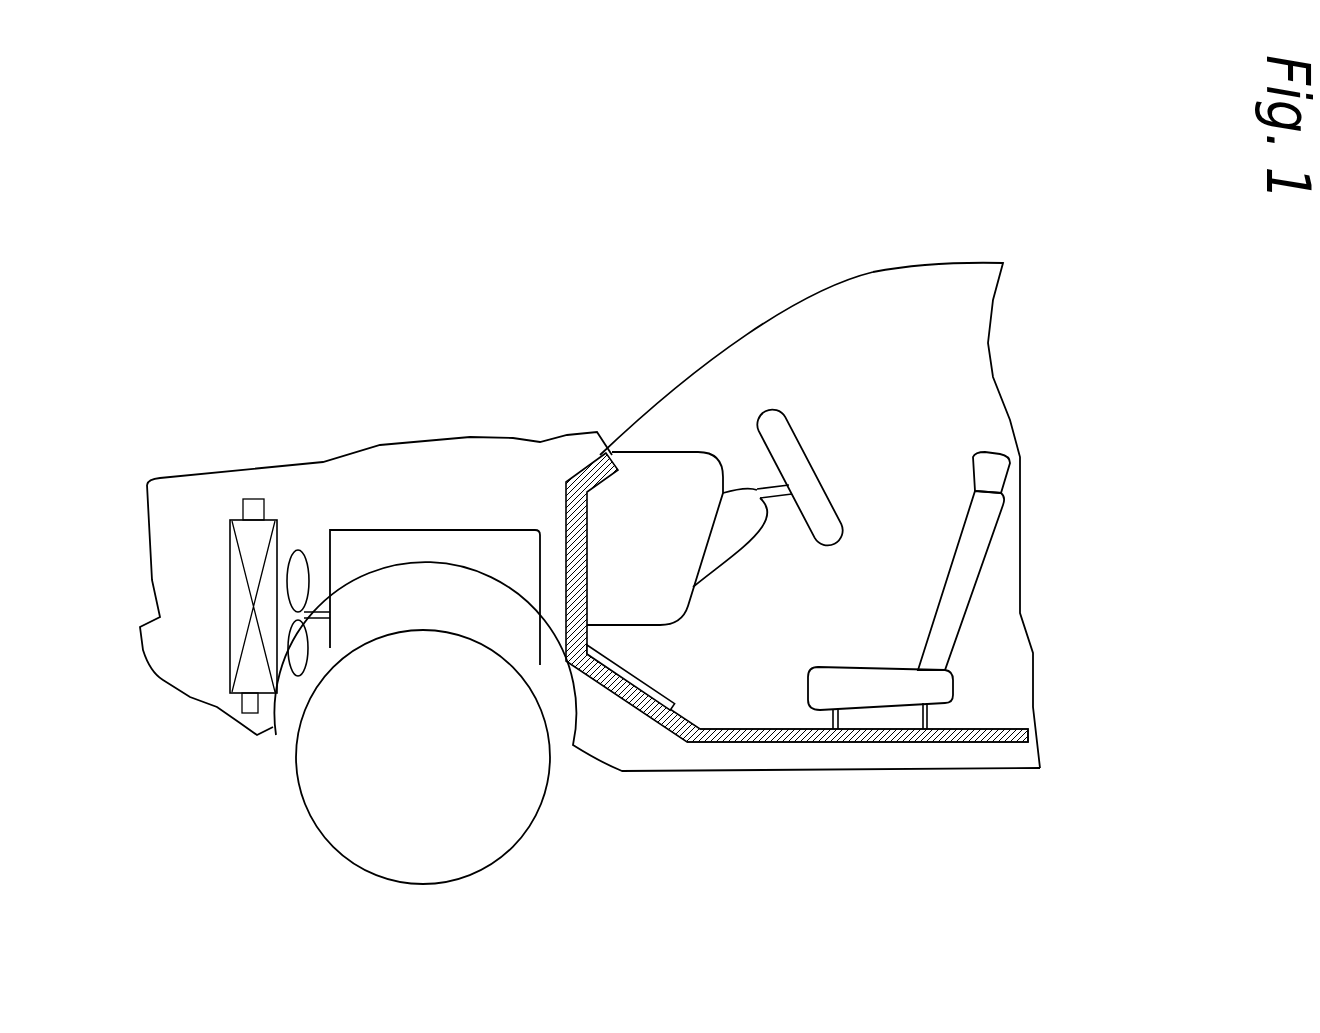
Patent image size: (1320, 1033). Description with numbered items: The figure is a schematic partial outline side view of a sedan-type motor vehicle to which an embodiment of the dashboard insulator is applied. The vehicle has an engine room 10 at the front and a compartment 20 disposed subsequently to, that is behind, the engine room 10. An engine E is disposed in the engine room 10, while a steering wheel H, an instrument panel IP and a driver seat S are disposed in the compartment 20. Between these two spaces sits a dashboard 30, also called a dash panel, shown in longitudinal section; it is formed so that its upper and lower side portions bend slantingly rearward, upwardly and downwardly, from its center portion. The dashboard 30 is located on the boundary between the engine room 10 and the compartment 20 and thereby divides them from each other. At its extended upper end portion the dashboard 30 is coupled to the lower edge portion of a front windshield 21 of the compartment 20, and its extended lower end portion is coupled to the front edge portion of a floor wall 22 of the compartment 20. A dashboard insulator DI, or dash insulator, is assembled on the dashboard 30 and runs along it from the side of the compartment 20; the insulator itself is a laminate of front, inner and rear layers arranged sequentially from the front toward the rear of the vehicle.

The engine room 10 is at (315, 458).
The compartment 20 is at (838, 284).
The front windshield 21 is at (647, 410).
The floor wall 22 is at (877, 742).
The dashboard 30 is at (595, 681).
The engine E is at (447, 530).
The steering wheel H is at (812, 468).
The driver seat S is at (987, 553).
The instrument panel IP is at (677, 450).
The dashboard insulator DI is at (632, 684).